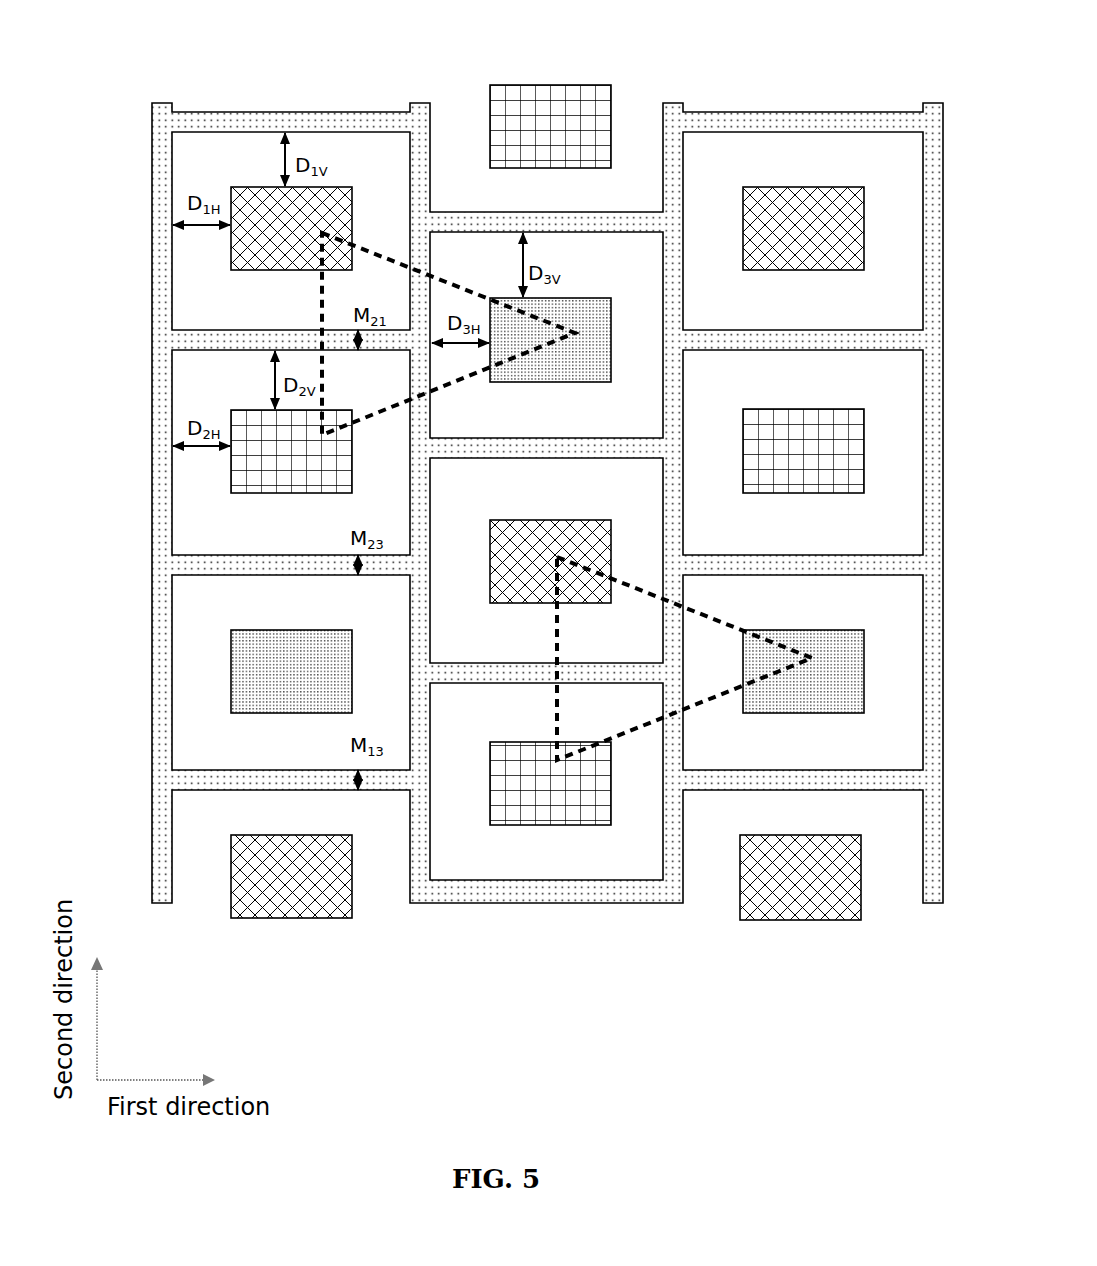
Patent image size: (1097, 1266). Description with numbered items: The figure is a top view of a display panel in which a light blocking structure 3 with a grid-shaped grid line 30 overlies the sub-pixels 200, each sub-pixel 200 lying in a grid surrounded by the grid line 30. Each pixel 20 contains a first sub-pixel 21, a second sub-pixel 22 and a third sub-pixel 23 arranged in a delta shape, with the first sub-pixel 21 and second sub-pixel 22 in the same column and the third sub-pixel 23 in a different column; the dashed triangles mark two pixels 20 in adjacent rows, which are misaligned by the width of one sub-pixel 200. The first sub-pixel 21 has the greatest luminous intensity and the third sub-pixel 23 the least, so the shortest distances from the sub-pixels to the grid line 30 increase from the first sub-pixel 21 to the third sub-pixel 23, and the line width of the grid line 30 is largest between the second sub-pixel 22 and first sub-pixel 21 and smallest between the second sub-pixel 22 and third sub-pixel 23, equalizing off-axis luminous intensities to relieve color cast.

The light blocking structure 3 is at (547, 525).
The grid line 30 is at (718, 115).
The sub-pixel 200 is at (798, 220).
The pixel 20 is at (421, 836).
The first sub-pixel 21 is at (352, 890).
The second sub-pixel 22 is at (550, 868).
The third sub-pixel 23 is at (260, 695).